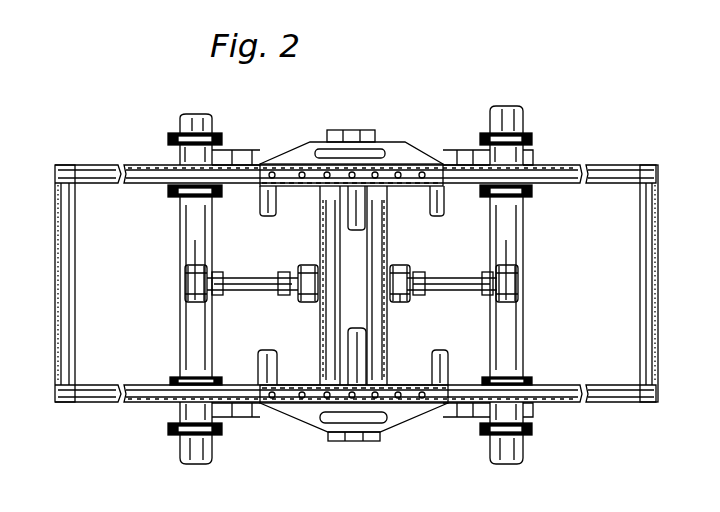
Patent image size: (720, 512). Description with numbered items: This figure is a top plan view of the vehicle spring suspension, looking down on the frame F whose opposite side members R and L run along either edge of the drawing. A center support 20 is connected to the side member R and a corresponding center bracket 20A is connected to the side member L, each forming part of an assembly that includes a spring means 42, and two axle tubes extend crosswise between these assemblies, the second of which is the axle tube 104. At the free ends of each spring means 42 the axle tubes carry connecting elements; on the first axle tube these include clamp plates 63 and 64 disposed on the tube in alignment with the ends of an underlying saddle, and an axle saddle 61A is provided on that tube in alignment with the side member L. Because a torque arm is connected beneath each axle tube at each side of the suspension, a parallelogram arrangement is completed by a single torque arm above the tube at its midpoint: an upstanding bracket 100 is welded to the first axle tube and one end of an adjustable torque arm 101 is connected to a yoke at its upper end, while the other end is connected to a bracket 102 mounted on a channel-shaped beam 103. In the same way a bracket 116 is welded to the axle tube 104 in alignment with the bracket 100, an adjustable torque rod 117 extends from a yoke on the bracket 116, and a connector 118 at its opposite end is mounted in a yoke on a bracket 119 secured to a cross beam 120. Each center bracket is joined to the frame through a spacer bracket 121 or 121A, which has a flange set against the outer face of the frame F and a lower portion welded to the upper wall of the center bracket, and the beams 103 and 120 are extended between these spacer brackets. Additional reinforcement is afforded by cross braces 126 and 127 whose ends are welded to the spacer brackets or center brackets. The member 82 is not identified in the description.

The side member L is at (86, 159).
The side member R is at (90, 404).
The frame F is at (137, 163).
The center support 20 is at (345, 442).
The center bracket 20A is at (362, 140).
The spring means 42 is at (242, 412).
The axle saddle 61A is at (192, 191).
The clamp plate 63 is at (185, 441).
The clamp plate 64 is at (190, 380).
The left post 82 is at (186, 322).
The upstanding bracket 100 is at (186, 273).
The adjustable torque arm 101 is at (240, 290).
The bracket 102 is at (300, 272).
The channel-shaped beam 103 is at (330, 229).
The axle tube 104 is at (513, 232).
The bracket 116 is at (522, 294).
The adjustable torque rod 117 is at (442, 290).
The connector 118 is at (414, 296).
The bracket 119 is at (408, 274).
The cross beam 120 is at (375, 236).
The spacer bracket 121 is at (410, 408).
The spacer bracket 121A is at (398, 152).
The cross brace 126 is at (262, 203).
The cross brace 127 is at (443, 200).